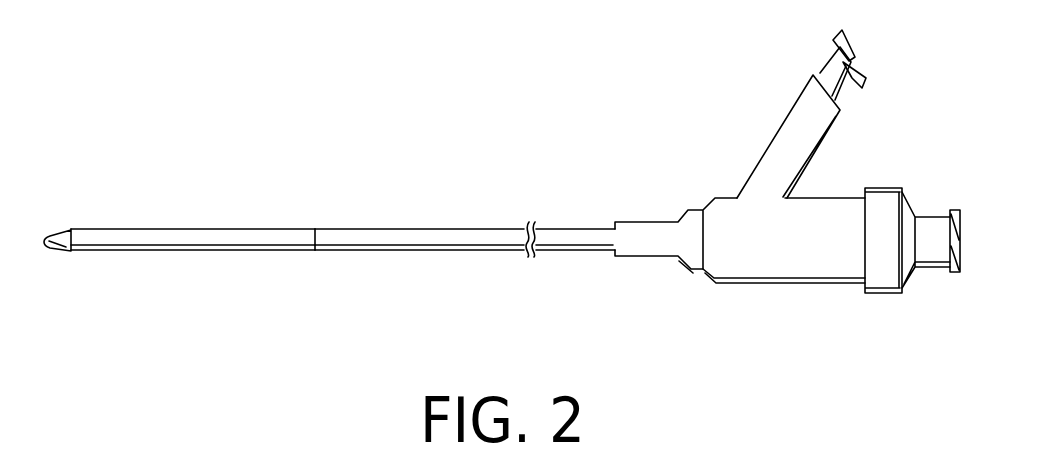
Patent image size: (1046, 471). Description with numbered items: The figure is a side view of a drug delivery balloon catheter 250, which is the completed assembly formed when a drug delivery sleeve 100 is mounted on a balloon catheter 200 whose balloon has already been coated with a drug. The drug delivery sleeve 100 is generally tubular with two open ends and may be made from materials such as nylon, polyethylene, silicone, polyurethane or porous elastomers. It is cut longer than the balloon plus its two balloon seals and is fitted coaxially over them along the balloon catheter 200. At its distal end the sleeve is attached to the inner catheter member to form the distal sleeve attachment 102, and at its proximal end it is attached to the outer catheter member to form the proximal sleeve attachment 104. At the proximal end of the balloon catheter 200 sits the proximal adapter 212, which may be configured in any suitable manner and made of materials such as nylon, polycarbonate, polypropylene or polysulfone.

The drug delivery sleeve 100 is at (171, 228).
The distal sleeve attachment 102 is at (72, 252).
The proximal sleeve attachment 104 is at (315, 226).
The balloon catheter 200 is at (418, 251).
The proximal adapter 212 is at (778, 279).
The drug delivery balloon catheter 250 is at (488, 112).